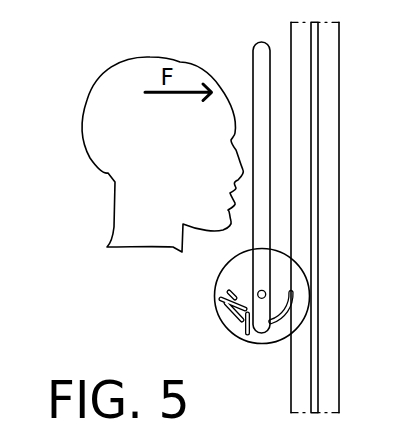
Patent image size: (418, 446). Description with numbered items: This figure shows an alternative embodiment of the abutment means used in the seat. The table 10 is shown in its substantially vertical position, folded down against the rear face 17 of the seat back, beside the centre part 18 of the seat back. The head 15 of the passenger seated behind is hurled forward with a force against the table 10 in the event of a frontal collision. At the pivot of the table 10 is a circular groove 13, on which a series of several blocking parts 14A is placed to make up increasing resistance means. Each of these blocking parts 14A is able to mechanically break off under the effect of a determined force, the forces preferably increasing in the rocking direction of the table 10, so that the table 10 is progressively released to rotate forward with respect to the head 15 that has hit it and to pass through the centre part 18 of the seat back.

The table 10 is at (260, 50).
The circular groove 13 is at (290, 322).
The blocking parts 14A is at (240, 337).
The head 15 is at (100, 117).
The rear face 17 is at (292, 32).
The centre part 18 is at (316, 122).